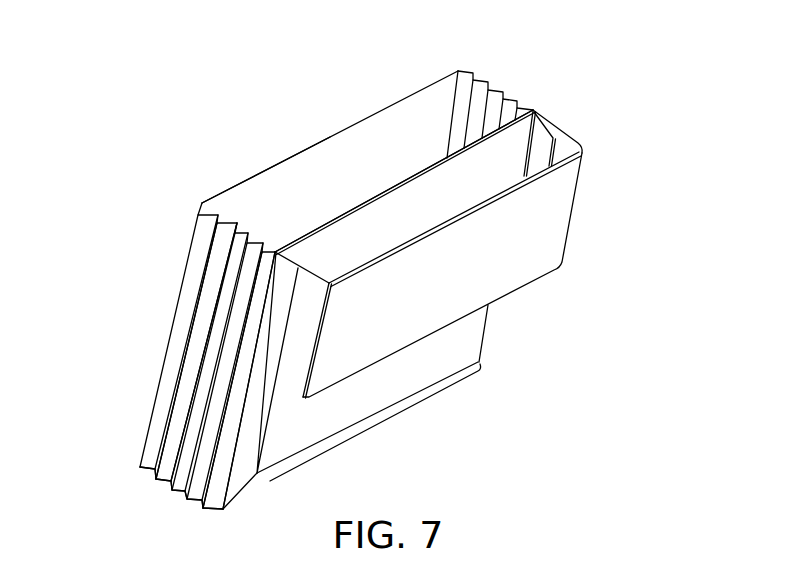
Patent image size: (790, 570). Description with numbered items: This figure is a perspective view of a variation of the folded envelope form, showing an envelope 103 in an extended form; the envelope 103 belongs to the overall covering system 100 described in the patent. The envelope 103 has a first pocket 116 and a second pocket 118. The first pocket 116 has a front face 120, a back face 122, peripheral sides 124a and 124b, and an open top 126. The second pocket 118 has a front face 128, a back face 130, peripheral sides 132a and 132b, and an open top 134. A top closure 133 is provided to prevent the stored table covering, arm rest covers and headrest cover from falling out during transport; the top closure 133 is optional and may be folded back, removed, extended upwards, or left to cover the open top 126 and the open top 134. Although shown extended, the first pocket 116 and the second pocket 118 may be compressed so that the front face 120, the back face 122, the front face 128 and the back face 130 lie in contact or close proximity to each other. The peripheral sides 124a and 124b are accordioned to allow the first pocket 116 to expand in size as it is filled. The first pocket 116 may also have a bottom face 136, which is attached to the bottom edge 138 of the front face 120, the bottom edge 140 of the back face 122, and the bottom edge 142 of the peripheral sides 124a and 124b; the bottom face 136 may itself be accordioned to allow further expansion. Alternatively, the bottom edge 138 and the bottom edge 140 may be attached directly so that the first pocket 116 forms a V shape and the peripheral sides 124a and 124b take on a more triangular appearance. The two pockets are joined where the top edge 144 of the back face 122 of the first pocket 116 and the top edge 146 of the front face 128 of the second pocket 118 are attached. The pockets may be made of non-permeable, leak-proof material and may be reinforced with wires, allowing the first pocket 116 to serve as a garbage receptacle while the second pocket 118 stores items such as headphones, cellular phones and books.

The storage system 100 is at (705, 562).
The envelope 103 is at (152, 142).
The first pocket 116 is at (182, 437).
The second pocket 118 is at (493, 332).
The front face 120 is at (327, 137).
The back face 122 is at (240, 470).
The peripheral side 124a is at (198, 393).
The peripheral side 124b is at (488, 99).
The open top 126 is at (290, 194).
The front face 128 is at (543, 108).
The back face 130 is at (433, 360).
The peripheral side 132a is at (285, 363).
The peripheral side 132b is at (560, 138).
The top closure 133 is at (493, 278).
The open top 134 is at (455, 188).
The bottom face 136 is at (177, 493).
The bottom edge 138 is at (143, 470).
The bottom edge 140 is at (228, 507).
The bottom edge 142 is at (190, 500).
The top edge 144 is at (345, 225).
The top edge 146 is at (347, 222).